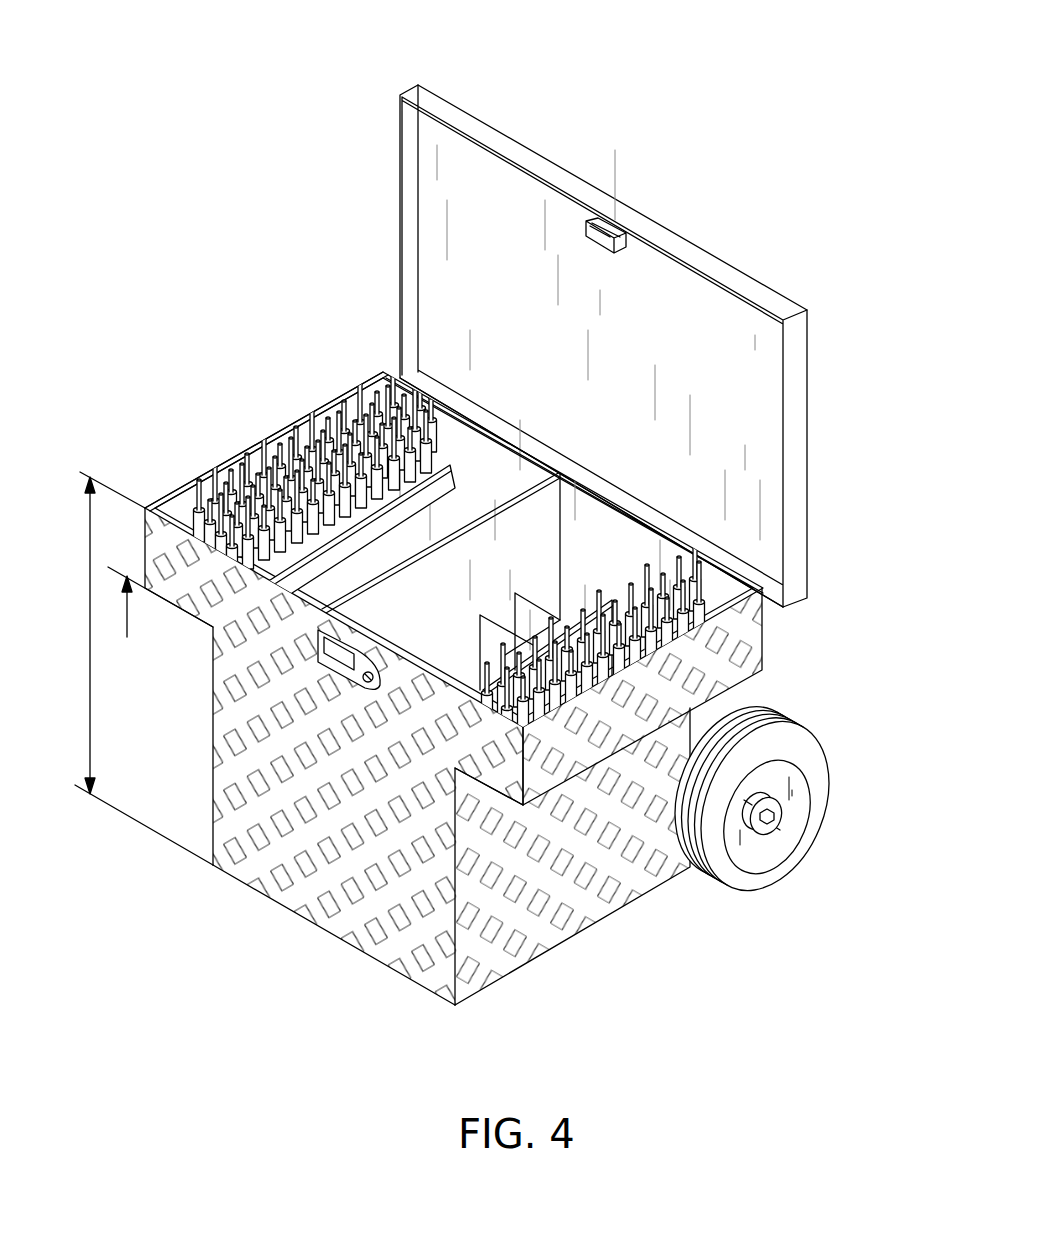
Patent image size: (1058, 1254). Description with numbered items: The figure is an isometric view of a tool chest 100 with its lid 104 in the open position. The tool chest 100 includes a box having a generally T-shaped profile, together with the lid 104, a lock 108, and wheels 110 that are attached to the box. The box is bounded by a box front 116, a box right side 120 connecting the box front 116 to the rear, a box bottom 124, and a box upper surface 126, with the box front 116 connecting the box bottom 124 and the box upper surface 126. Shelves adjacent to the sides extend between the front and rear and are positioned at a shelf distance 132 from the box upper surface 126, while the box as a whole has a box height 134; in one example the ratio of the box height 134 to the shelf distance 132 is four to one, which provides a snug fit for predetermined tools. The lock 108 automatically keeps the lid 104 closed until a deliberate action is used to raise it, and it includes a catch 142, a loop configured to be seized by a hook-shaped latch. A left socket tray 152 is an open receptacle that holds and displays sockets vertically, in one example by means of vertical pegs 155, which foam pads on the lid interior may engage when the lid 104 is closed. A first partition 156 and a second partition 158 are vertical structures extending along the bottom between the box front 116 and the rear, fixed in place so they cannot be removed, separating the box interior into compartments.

The tool chest 100 is at (491, 677).
The lid 104 is at (417, 93).
The lock 108 is at (313, 660).
The wheels 110 is at (793, 853).
The box front 116 is at (387, 937).
The box right side 120 is at (572, 912).
The box bottom 124 is at (236, 886).
The box upper surface 126 is at (195, 483).
The shelf distance 132 is at (127, 495).
The box height 134 is at (90, 800).
The catch 142 is at (618, 235).
The left socket tray 152 is at (322, 470).
The vertical pegs 155 is at (328, 553).
The first partition 156 is at (580, 617).
The second partition 158 is at (492, 537).